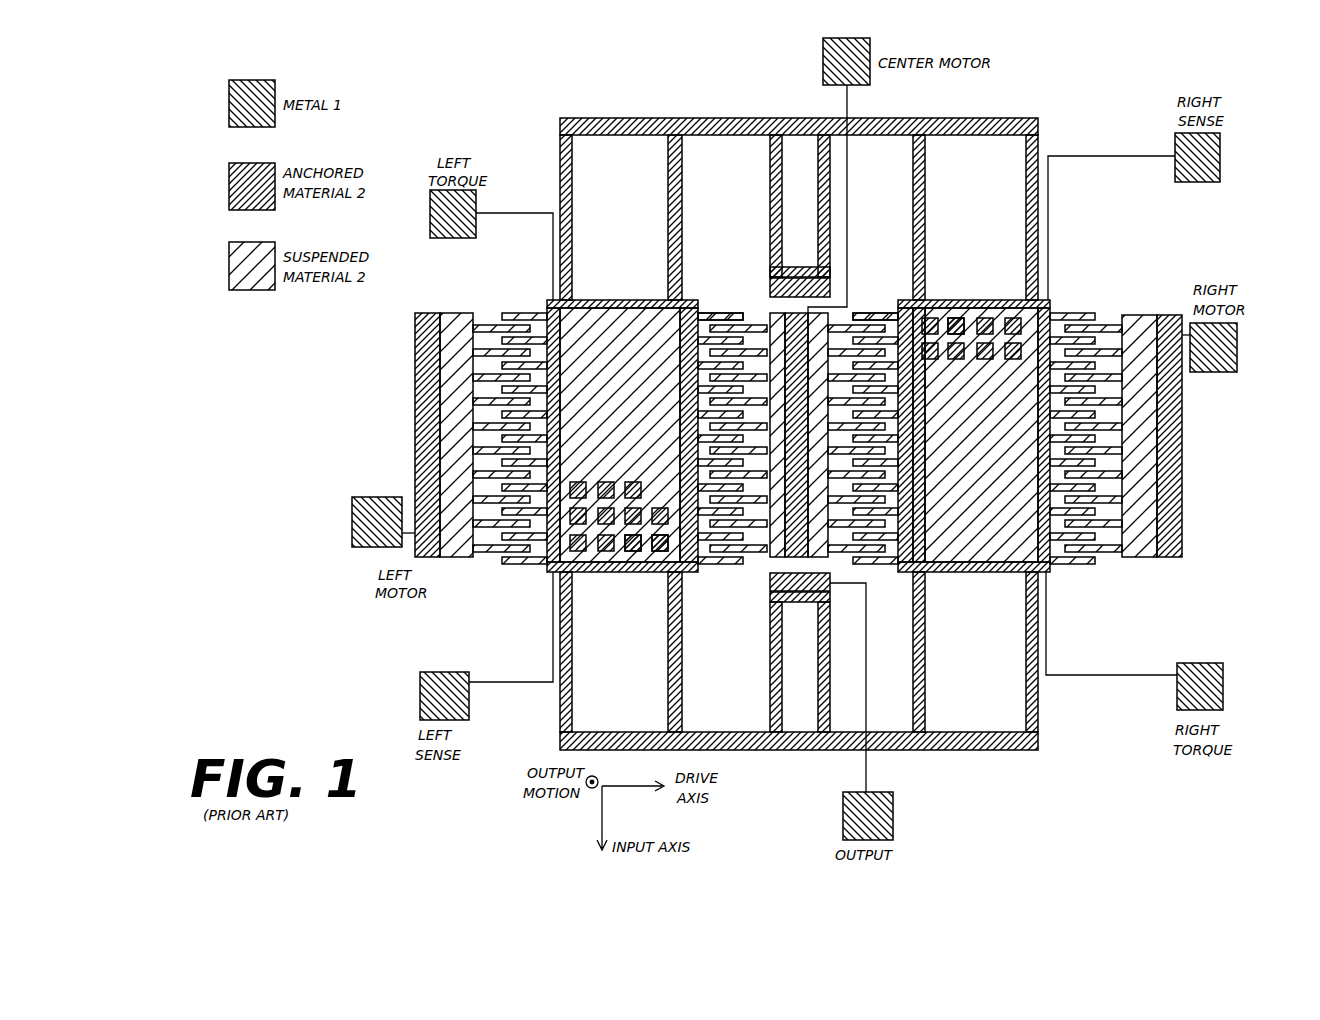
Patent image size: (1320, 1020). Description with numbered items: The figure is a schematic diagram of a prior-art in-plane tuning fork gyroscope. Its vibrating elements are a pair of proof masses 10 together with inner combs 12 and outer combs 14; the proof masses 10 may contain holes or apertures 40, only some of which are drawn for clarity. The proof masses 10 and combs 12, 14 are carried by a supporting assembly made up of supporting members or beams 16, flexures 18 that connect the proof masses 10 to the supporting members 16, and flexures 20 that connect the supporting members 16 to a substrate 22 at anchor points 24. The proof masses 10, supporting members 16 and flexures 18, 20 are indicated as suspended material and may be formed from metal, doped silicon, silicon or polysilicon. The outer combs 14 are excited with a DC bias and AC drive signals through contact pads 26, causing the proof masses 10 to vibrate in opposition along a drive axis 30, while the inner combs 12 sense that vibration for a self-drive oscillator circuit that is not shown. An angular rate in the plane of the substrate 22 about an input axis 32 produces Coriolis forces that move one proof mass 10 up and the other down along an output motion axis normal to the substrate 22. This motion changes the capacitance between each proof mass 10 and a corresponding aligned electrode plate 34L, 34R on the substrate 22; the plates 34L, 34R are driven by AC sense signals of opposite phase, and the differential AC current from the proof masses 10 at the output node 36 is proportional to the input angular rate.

The proof mass 10 is at (608, 318).
The inner comb 12 is at (722, 310).
The outer comb 14 is at (523, 312).
The supporting member 16 is at (672, 117).
The flexure 18 is at (572, 200).
The flexure 20 is at (818, 176).
The substrate 22 is at (983, 616).
The anchor point 24 is at (770, 290).
The contact pad 26 is at (352, 525).
The drive axis 30 is at (628, 787).
The input axis 32 is at (601, 815).
The left electrode plate 34L is at (620, 572).
The right electrode plate 34R is at (948, 318).
The output node 36 is at (893, 832).
The hole 40 is at (656, 572).